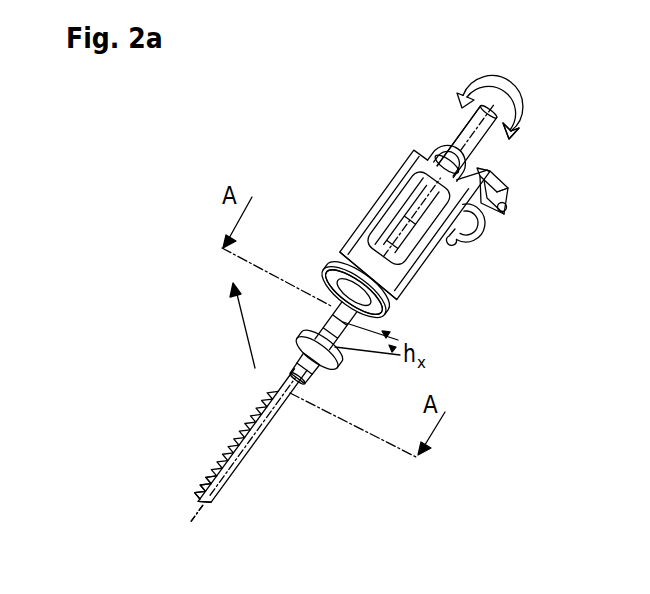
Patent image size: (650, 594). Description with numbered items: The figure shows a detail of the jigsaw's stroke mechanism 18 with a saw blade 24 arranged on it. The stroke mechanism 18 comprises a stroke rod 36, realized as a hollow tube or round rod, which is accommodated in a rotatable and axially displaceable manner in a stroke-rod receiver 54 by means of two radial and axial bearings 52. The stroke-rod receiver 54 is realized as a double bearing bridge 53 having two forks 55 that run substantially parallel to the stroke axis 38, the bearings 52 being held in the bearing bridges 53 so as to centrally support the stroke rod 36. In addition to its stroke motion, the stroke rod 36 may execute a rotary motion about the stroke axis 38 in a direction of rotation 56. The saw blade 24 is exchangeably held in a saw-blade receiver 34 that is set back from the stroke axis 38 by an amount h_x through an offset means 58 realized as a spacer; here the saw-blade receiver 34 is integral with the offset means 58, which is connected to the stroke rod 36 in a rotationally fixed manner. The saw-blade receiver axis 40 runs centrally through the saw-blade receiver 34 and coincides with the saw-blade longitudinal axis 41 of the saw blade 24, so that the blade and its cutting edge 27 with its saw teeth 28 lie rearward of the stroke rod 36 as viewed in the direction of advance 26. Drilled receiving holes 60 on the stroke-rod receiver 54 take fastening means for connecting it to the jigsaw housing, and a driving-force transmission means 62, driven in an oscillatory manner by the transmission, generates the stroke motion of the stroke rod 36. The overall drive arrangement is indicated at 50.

The stroke mechanism 18 is at (506, 322).
The saw blade 24 is at (268, 437).
The direction of advance 26 is at (247, 335).
The cutting edge 27 is at (227, 467).
The saw teeth 28 is at (204, 485).
The saw-blade receiver 34 is at (342, 375).
The stroke rod 36 is at (492, 135).
The stroke axis 38 is at (520, 77).
The saw-blade receiver axis 40 is at (193, 523).
The saw-blade longitudinal axis 41 is at (197, 513).
The drive unit 50 is at (558, 85).
The radial and axial bearings 52 is at (433, 148).
The bearing bridge 53 is at (432, 150).
The stroke-rod receiver 54 is at (480, 168).
The forks 55 is at (382, 192).
The direction of rotation 56 is at (522, 108).
The offset means 58 is at (365, 325).
The receiving holes 60 is at (508, 202).
The driving-force transmission means 62 is at (477, 233).